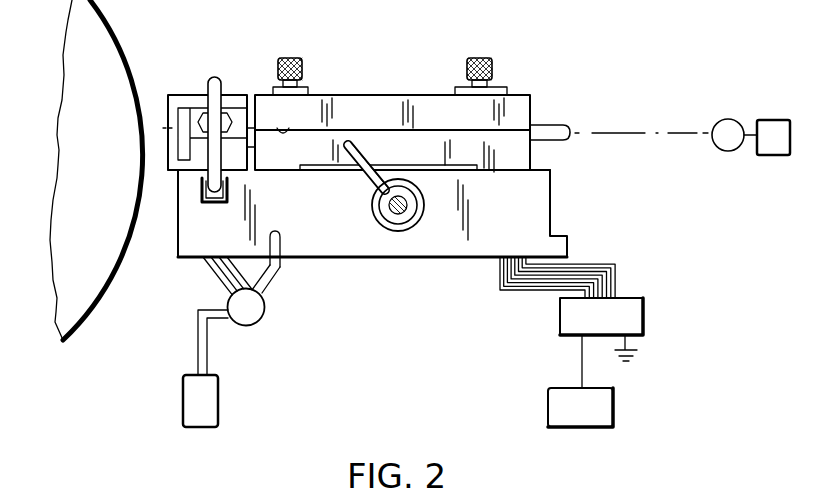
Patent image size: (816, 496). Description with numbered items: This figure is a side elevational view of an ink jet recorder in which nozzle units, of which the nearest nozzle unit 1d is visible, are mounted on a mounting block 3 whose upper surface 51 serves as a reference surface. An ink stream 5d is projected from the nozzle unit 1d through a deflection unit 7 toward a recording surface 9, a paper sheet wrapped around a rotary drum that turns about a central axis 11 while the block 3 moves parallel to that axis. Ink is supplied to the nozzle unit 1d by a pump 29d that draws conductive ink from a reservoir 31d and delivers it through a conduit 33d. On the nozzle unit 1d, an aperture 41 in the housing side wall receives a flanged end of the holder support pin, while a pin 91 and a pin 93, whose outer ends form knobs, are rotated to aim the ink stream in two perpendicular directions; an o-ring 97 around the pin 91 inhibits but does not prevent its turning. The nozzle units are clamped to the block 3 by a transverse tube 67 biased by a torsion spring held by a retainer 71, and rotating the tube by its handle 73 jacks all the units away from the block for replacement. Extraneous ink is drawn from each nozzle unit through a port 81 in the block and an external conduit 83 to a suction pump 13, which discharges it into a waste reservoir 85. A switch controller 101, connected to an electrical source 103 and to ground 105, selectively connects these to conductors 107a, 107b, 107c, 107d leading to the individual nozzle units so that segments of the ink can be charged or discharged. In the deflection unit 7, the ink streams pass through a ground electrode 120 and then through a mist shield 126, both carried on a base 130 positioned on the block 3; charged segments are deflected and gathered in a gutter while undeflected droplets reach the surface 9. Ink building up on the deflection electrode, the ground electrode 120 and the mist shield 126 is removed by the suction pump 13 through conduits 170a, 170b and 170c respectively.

The nozzle unit 1d is at (405, 88).
The mounting block 3 is at (560, 210).
The ink stream 5d is at (163, 128).
The deflection unit 7 is at (234, 76).
The recording surface 9 is at (113, 31).
The central axis 11 is at (22, 165).
The suction pump 13 is at (258, 327).
The pump 29d is at (724, 110).
The reservoir 31d is at (784, 93).
The conduit 33d is at (604, 105).
The aperture 41 is at (288, 122).
The upper surface 51 is at (549, 173).
The transverse tube 67 is at (390, 217).
The retainer 71 is at (421, 216).
The handle 73 is at (360, 183).
The port 81 is at (280, 238).
The external conduit 83 is at (273, 287).
The waste reservoir 85 is at (218, 392).
The pin 91 is at (300, 62).
The pin 93 is at (493, 63).
The o-ring 97 is at (508, 90).
The switch controller 101 is at (586, 327).
The electrical source 103 is at (614, 398).
The ground 105 is at (637, 352).
The conductor 107a is at (708, 316).
The conductor 107b is at (708, 284).
The conductor 107c is at (693, 260).
The conductor 107d is at (637, 240).
The ground electrode 120 is at (257, 146).
The mist shield 126 is at (176, 146).
The base 130 is at (177, 155).
The conduit 170a is at (222, 275).
The conduit 170b is at (218, 286).
The conduit 170c is at (213, 303).